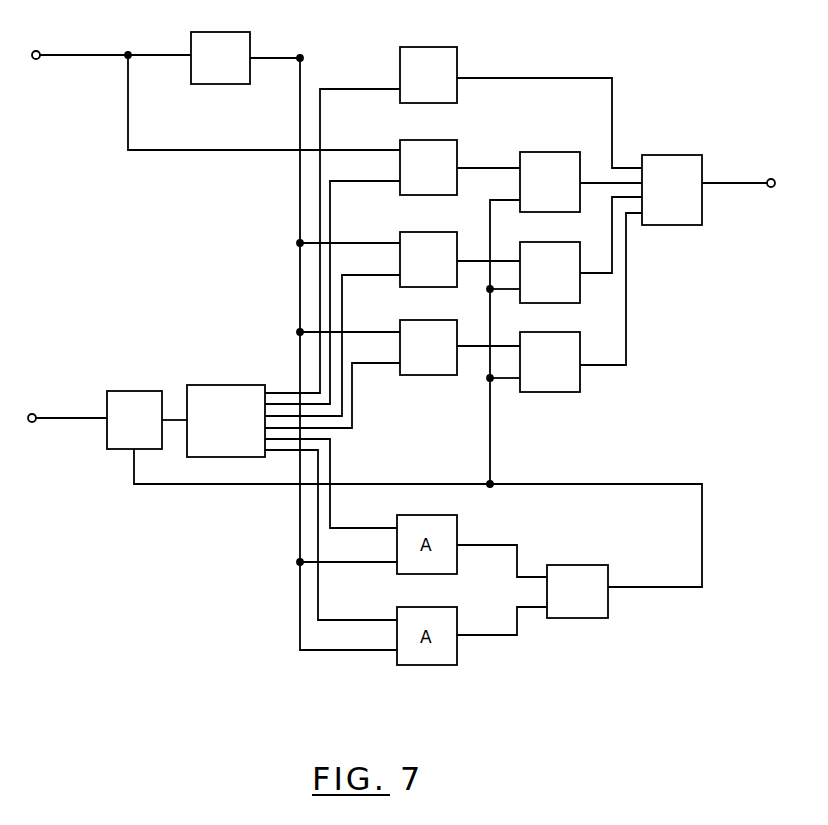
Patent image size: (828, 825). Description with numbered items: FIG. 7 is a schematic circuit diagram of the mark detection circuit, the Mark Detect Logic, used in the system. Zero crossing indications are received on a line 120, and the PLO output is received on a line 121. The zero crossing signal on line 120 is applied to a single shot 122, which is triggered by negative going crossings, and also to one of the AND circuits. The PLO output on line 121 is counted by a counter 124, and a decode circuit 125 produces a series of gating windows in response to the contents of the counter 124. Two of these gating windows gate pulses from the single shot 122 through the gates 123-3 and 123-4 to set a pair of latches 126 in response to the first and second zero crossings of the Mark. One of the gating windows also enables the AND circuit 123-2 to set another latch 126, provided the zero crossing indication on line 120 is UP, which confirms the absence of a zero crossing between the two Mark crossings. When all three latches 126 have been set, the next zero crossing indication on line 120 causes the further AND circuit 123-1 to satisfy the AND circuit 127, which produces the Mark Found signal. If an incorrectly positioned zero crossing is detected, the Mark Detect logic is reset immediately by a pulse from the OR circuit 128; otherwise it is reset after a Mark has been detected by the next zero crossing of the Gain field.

The line 120 is at (62, 58).
The line 121 is at (58, 420).
The single shot 122 is at (228, 85).
The AND circuit 123-1 is at (455, 33).
The AND circuit 123-2 is at (455, 126).
The AND gate 123-3 is at (455, 218).
The AND gate 123-4 is at (455, 306).
The counter 124 is at (146, 375).
The decode circuit 125 is at (225, 385).
The latches 126 is at (580, 135).
The AND circuit 127 is at (680, 155).
The OR circuit 128 is at (608, 546).